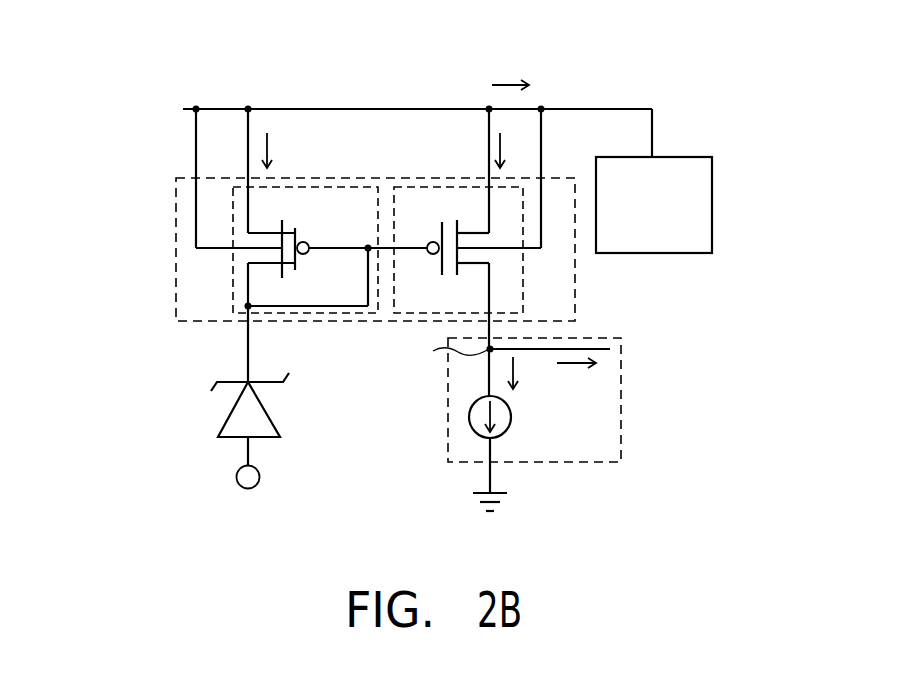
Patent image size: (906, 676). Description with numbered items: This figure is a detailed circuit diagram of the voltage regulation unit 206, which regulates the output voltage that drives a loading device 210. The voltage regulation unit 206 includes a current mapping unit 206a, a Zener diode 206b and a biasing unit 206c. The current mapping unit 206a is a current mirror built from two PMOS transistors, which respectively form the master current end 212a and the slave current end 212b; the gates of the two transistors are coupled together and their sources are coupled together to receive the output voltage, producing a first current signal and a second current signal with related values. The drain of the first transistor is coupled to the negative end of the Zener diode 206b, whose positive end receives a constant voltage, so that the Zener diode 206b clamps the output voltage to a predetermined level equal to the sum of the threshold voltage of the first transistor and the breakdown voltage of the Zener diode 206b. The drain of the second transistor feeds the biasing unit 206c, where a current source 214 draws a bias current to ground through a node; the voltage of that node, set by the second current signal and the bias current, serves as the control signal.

The voltage regulation unit 206 is at (74, 26).
The current mapping unit 206a is at (176, 250).
The Zener diode 206b is at (230, 408).
The biasing unit 206c is at (621, 388).
The loading device 210 is at (712, 201).
The master current end 212a is at (233, 290).
The slave current end 212b is at (523, 288).
The current source 214 is at (512, 417).